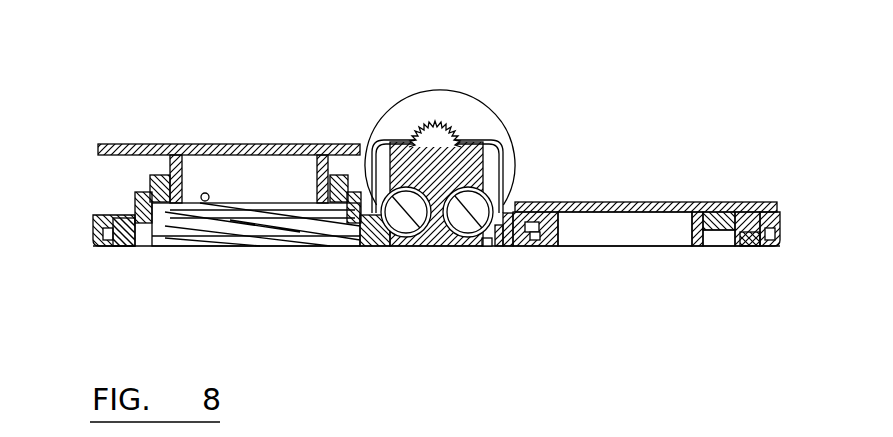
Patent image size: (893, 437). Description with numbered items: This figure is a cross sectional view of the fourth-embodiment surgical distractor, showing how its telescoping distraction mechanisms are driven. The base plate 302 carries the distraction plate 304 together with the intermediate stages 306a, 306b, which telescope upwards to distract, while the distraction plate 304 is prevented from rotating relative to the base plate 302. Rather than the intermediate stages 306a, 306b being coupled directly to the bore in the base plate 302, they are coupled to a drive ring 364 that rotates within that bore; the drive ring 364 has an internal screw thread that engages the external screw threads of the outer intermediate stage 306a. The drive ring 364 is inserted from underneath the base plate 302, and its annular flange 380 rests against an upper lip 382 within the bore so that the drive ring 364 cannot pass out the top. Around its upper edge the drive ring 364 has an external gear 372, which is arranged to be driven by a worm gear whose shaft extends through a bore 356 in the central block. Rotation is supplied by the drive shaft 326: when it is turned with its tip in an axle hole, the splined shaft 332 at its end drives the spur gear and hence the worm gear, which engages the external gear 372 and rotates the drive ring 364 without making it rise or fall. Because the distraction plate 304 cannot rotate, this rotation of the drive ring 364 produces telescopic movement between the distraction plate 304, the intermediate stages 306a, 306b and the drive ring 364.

The base plate 302 is at (93, 218).
The distraction plate 304 is at (250, 142).
The outer intermediate stage 306a is at (133, 208).
The intermediate stage 306b is at (133, 199).
The drive shaft 326 is at (472, 115).
The splined shaft 332 is at (440, 125).
The bore 356 is at (403, 158).
The drive ring 364 is at (121, 240).
The external gear 372 is at (392, 247).
The annular flange 380 is at (105, 240).
The upper lip 382 is at (97, 225).